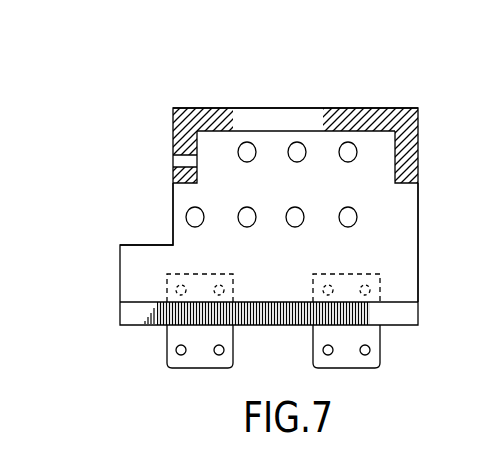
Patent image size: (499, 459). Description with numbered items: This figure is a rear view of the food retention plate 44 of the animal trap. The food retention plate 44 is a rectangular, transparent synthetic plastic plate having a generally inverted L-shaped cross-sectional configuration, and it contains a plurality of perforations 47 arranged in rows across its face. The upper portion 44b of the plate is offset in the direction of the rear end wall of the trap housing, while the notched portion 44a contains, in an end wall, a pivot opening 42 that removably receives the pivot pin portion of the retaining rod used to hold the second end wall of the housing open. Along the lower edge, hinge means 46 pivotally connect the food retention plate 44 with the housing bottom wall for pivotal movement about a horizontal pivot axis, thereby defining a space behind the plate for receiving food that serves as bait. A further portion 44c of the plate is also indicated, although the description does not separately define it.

The pivot opening 42 is at (175, 160).
The food retention plate 44 is at (119, 299).
The notched portion 44a is at (395, 273).
The upper portion 44b is at (392, 110).
The stepped side portion of mounting block 44c is at (160, 200).
The hinge means 46 is at (167, 350).
The perforations 47 is at (296, 144).